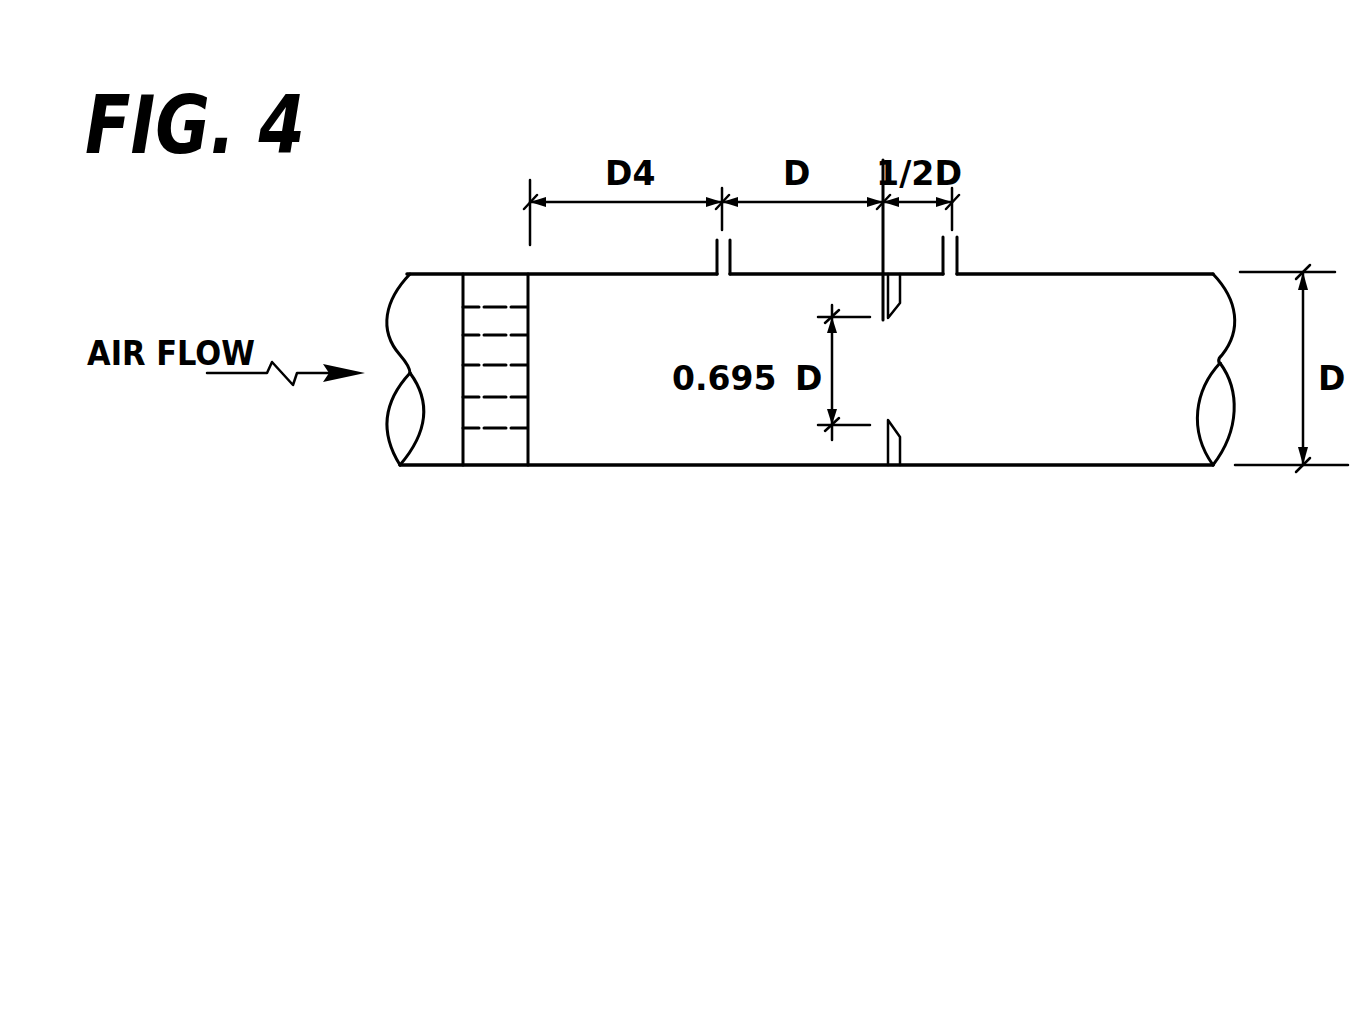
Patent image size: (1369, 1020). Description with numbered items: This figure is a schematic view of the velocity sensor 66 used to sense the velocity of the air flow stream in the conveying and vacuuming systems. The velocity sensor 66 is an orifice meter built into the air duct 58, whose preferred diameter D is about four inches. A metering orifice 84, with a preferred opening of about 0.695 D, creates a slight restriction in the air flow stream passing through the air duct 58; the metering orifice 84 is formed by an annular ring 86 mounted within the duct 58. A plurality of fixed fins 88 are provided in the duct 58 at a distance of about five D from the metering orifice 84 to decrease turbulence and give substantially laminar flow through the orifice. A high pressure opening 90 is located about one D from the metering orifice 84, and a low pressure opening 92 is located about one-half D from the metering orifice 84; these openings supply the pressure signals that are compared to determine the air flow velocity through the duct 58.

The air duct 58 is at (1092, 262).
The velocity sensor 66 is at (780, 548).
The metering orifice 84 is at (910, 364).
The annular ring 86 is at (902, 449).
The fixed fins 88 is at (520, 432).
The high pressure opening 90 is at (680, 254).
The low pressure opening 92 is at (990, 252).